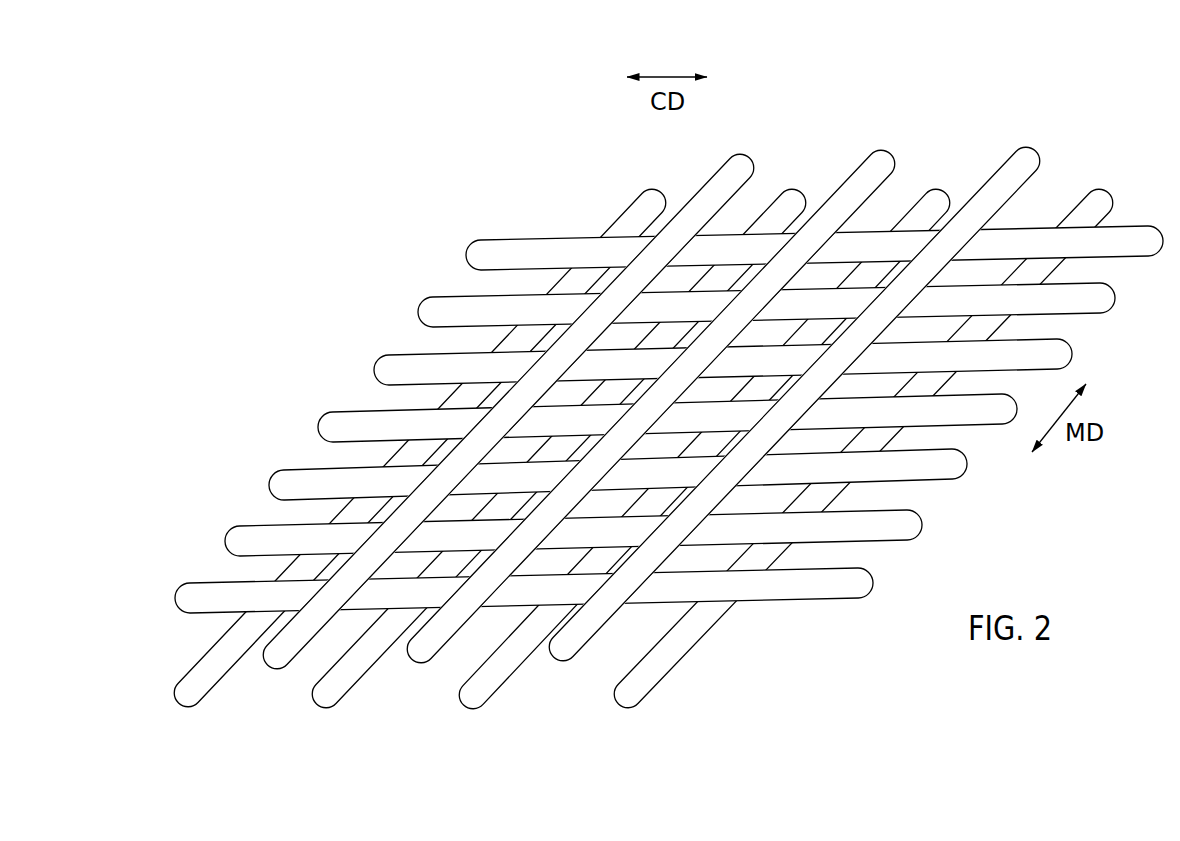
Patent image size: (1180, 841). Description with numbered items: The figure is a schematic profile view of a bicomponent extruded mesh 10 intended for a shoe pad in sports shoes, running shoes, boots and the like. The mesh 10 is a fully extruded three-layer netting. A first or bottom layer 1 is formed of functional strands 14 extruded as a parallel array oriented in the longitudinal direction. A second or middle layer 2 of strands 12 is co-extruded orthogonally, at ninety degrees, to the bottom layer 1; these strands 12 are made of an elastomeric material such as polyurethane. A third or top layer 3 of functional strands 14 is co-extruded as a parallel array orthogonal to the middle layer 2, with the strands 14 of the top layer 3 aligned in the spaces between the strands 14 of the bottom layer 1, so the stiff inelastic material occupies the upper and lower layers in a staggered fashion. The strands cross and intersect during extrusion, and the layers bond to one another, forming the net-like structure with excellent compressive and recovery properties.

The bicomponent extruded mesh 10 is at (540, 152).
The strands 12 is at (666, 400).
The functional strands 14 is at (659, 368).
The first or bottom layer 1 is at (661, 678).
The second or middle layer 2 is at (922, 526).
The third or top layer 3 is at (1031, 152).